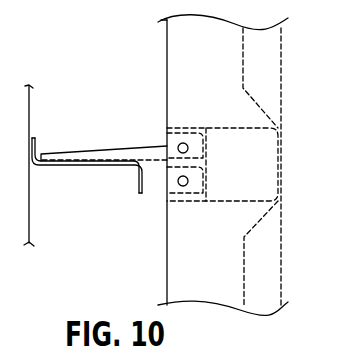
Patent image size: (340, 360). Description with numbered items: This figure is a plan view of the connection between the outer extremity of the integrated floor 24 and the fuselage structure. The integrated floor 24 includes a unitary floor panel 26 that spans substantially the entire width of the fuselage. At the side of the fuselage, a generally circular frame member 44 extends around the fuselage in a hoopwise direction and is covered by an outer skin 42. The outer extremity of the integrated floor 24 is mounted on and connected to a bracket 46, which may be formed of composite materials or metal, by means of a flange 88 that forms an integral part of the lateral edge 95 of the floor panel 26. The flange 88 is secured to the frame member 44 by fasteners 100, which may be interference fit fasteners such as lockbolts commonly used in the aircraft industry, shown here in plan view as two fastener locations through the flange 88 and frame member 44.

The integrated floor 24 is at (100, 63).
The floor panel 26 is at (188, 50).
The outer skin 42 is at (30, 236).
The frame member 44 is at (82, 167).
The bracket 46 is at (133, 151).
The flange 88 is at (180, 262).
The lateral edge 95 is at (199, 283).
The fastener 100 is at (178, 148).